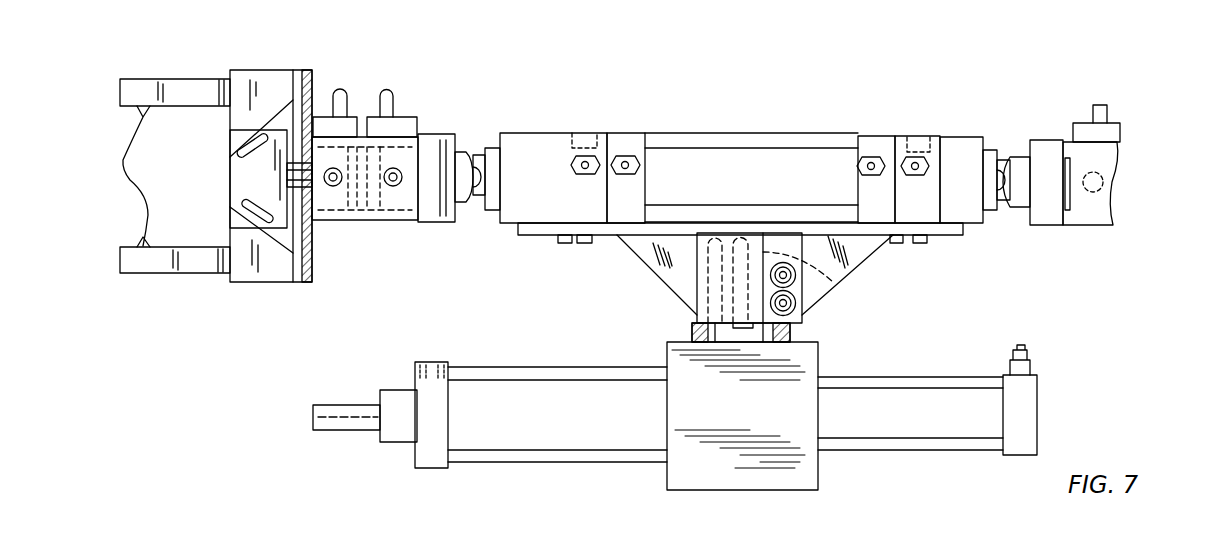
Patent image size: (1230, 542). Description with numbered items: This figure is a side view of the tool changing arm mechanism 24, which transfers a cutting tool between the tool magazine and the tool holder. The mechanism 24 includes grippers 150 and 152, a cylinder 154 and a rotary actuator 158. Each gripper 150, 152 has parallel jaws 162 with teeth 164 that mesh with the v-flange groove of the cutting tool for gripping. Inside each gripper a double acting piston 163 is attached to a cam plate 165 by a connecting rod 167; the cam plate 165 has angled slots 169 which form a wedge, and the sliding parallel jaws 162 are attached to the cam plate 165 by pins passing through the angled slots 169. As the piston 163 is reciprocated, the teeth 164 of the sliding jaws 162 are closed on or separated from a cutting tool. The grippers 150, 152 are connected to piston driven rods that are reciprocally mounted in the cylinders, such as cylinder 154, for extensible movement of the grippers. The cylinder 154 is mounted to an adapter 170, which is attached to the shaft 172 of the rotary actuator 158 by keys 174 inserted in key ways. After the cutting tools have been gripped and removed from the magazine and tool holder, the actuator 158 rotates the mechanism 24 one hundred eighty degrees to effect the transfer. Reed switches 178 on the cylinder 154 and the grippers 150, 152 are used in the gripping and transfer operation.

The tool changing arm mechanism 24 is at (698, 108).
The gripper 150 is at (312, 83).
The gripper 152 is at (1043, 150).
The cylinder 154 is at (713, 168).
The rotary actuator 158 is at (797, 465).
The parallel jaws 162 is at (160, 93).
The double acting piston 163 is at (363, 197).
The teeth 164 is at (122, 163).
The cam plate 165 is at (247, 175).
The connecting rod 167 is at (305, 197).
The angled slots 169 is at (247, 155).
The adapter 170 is at (680, 277).
The shaft 172 is at (763, 332).
The keys 174 is at (835, 282).
The reed switches 178 is at (393, 123).